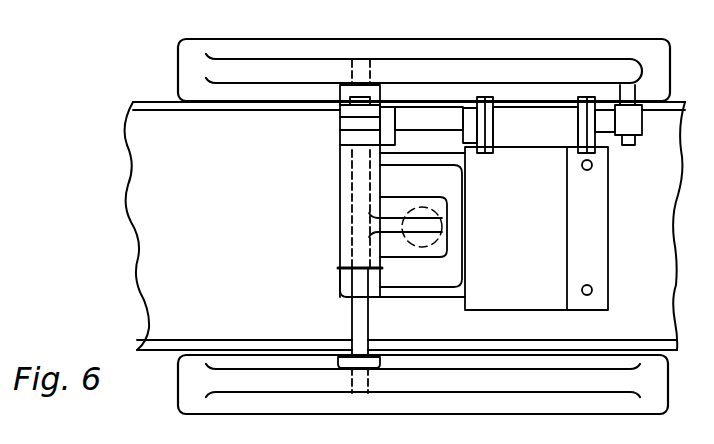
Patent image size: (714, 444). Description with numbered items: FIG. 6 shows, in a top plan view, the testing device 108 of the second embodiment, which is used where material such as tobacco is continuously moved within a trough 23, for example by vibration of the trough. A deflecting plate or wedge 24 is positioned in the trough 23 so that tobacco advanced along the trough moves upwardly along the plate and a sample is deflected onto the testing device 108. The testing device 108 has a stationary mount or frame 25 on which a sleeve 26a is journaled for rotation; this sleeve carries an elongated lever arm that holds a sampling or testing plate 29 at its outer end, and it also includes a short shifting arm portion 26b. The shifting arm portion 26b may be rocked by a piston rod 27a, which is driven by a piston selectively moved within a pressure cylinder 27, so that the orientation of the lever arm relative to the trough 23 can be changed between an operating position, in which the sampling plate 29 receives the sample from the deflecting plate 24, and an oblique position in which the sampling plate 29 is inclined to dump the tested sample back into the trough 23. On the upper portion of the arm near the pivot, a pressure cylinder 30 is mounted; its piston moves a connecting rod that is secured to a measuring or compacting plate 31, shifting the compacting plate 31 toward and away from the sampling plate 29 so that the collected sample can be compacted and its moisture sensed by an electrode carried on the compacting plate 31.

The trough 23 is at (150, 163).
The deflecting plate 24 is at (535, 290).
The stationary mount 25 is at (182, 46).
The sleeve 26a is at (346, 248).
The shifting arm portion 26b is at (345, 138).
The pressure cylinder 27 is at (520, 112).
The piston rod 27a is at (405, 120).
The sampling plate 29 is at (378, 291).
The pressure cylinder 30 is at (427, 239).
The compacting plate 31 is at (443, 182).
The testing device 108 is at (334, 205).